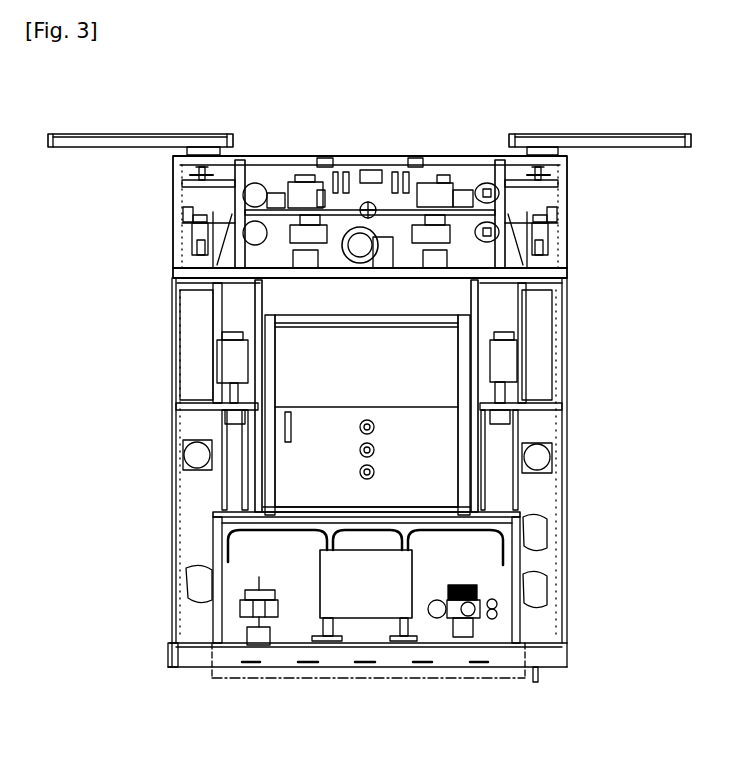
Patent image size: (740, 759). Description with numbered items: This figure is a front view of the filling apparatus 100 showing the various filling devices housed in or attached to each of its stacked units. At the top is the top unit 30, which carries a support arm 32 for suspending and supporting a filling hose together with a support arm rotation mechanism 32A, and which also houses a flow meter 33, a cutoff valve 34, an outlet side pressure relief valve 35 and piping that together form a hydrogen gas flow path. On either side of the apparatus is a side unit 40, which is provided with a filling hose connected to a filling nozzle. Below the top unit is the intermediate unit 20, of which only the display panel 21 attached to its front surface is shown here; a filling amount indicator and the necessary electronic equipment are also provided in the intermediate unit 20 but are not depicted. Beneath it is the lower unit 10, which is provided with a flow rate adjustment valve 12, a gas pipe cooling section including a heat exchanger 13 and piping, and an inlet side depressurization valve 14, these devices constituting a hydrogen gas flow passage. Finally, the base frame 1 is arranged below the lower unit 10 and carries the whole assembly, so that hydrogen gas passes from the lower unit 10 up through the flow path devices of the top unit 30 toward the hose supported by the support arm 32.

The substrate processing apparatus 100 is at (417, 123).
The base frame 1 is at (188, 660).
The lower unit 10 is at (301, 624).
The flow rate adjustment valve 12 is at (478, 623).
The heat exchanger 13 is at (372, 608).
The inlet side depressurization valve 14 is at (247, 622).
The intermediate unit 20 is at (488, 437).
The display panel 21 is at (298, 392).
The top unit 30 is at (580, 219).
The support arm 32 is at (100, 133).
The support arm rotation mechanism 32A is at (182, 169).
The flow meter 33 is at (367, 268).
The cutoff valve 34 is at (453, 252).
The outlet side pressure relief valve 35 is at (288, 256).
The side unit 40 is at (167, 392).